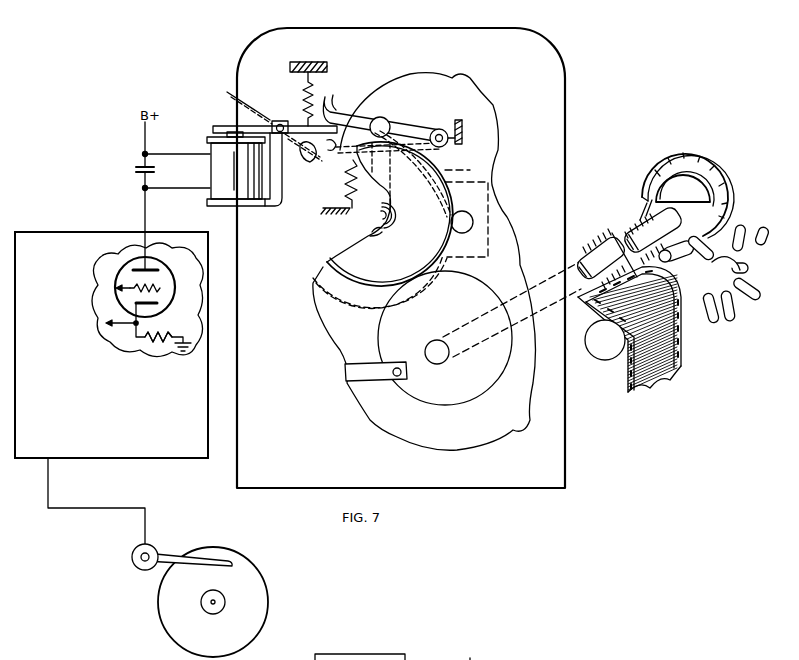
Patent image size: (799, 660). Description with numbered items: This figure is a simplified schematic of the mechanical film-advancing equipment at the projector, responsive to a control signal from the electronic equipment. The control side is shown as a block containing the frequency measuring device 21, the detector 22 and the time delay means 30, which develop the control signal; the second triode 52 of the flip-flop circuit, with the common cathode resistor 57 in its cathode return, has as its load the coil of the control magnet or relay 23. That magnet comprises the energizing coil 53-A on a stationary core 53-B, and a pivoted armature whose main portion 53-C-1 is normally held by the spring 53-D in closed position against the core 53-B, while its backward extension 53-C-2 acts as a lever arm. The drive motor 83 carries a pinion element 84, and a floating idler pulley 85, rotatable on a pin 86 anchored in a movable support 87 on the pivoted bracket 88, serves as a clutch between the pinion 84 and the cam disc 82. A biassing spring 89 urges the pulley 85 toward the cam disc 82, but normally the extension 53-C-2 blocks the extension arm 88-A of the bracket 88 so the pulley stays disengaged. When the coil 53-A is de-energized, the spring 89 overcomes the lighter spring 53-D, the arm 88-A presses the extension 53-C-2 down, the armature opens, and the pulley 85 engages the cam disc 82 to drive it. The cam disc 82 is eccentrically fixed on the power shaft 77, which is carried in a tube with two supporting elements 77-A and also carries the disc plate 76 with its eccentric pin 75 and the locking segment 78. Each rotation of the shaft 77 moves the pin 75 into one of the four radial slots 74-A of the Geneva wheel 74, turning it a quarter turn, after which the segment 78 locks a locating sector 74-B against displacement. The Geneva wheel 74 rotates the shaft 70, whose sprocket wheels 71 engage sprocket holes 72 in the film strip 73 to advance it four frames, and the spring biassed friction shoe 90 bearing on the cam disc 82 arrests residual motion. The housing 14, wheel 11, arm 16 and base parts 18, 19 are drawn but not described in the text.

The housing 14 is at (474, 28).
The frequency measuring device 21 is at (106, 233).
The detector 22 is at (111, 345).
The time delay means 30 is at (111, 345).
The second triode 52 is at (178, 262).
The common cathode resistor 57 is at (170, 332).
The magnet or relay 23 is at (306, 146).
The energizing coil 53-A is at (228, 157).
The stationary core 53-B is at (213, 133).
The main portion of the pivoted armature 53-C-1 is at (230, 118).
The backward extension of the armature 53-C-2 is at (362, 156).
The spring 53-D is at (305, 104).
The biassing spring 89 is at (345, 186).
The extension arm 88-A is at (330, 92).
The pivoted bracket 88 is at (395, 124).
The movable support 87 is at (431, 160).
The pin 86 is at (372, 237).
The floating idler pulley 85 is at (368, 305).
The pinion element 84 is at (473, 220).
The drive motor 83 is at (482, 170).
The cam disc 82 is at (502, 290).
The spring biassed friction shoe 90 is at (387, 363).
The rotatable shaft 70 is at (643, 341).
The sprocket wheels 71 is at (606, 362).
The sprocket holes 72 is at (627, 390).
The film strip 73 is at (647, 378).
The power shaft 77 is at (583, 250).
The supporting elements 77-A is at (612, 230).
The locking segment 78 is at (660, 199).
The disc plate 76 is at (719, 183).
The eccentric pin 75 is at (662, 258).
The Geneva wheel 74 is at (733, 285).
The radial slots 74-A is at (770, 300).
The locating sectors 74-B is at (722, 322).
The wheel 11 is at (271, 600).
The pickup arm 16 is at (168, 550).
The base 18 is at (405, 659).
The base element 19 is at (471, 656).